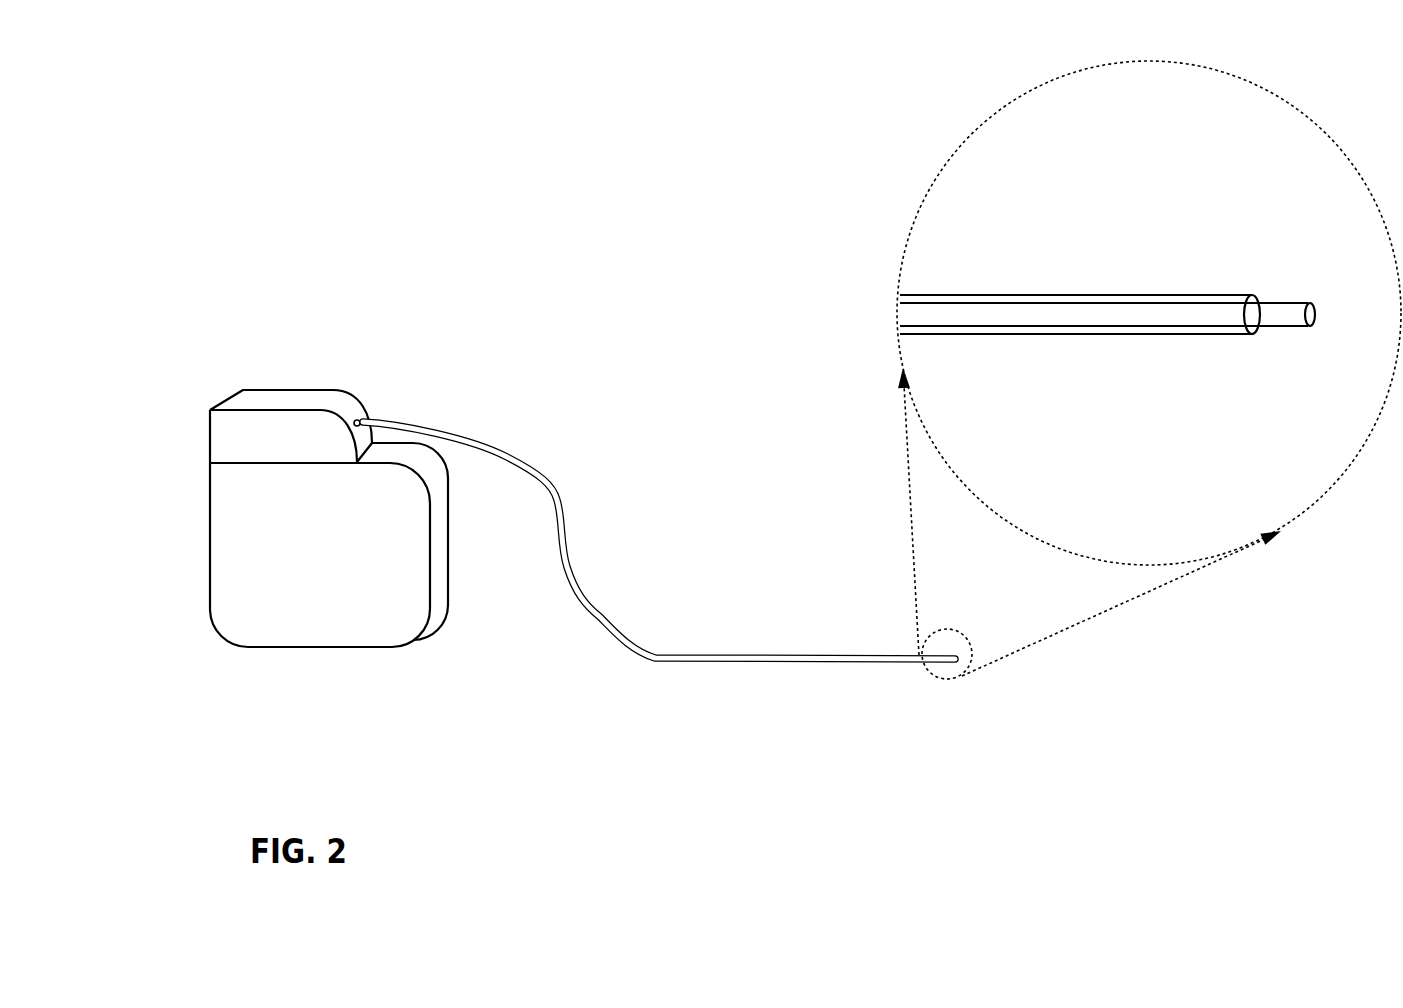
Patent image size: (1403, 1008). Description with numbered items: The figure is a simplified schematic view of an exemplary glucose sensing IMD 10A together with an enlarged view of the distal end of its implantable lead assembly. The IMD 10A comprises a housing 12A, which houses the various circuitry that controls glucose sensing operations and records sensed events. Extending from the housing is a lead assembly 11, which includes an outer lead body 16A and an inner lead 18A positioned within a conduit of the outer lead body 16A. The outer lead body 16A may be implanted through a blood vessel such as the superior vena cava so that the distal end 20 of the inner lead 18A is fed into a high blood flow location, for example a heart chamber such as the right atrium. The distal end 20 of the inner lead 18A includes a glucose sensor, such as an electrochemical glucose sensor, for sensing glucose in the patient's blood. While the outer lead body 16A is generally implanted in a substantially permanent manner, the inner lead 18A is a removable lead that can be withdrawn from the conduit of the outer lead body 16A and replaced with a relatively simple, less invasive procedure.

The glucose sensing IMD 10A is at (443, 352).
The housing 12A is at (210, 513).
The lead assembly 11 is at (570, 564).
The outer lead body 16A is at (1023, 299).
The inner lead 18A is at (1073, 318).
The distal end 20 is at (1334, 278).